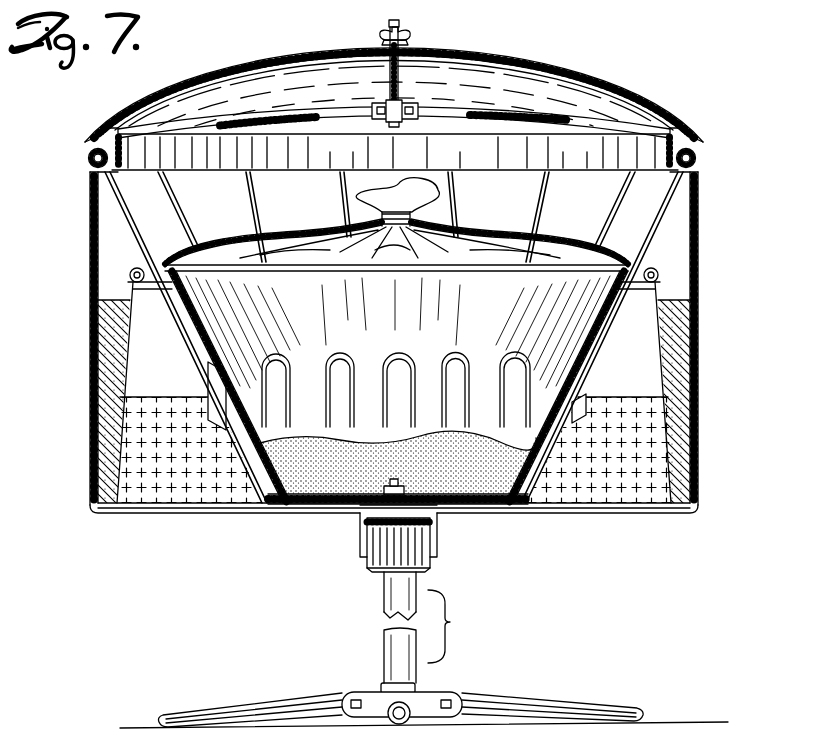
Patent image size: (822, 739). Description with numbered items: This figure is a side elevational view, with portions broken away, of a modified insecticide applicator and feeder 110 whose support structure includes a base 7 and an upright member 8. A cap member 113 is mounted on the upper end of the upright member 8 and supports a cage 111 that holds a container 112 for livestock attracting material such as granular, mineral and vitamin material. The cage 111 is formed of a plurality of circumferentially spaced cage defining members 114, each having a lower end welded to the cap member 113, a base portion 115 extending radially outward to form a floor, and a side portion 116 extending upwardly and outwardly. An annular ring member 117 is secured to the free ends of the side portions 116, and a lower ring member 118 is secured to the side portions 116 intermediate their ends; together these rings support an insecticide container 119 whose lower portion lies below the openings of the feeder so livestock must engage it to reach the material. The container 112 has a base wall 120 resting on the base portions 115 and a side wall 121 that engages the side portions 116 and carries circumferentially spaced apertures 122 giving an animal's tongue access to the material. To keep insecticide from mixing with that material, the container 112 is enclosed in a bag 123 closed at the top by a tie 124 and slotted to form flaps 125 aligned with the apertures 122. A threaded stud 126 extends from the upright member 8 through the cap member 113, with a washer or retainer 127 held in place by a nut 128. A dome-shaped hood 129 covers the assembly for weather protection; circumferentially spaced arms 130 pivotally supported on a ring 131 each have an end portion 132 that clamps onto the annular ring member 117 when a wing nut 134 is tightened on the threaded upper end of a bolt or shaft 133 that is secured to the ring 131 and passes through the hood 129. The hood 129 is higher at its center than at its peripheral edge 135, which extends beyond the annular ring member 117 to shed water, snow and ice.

The base 7 is at (534, 700).
The upright member 8 is at (417, 675).
The insecticide applicator and feeder 110 is at (712, 88).
The cage 111 is at (263, 521).
The container 112 is at (396, 359).
The cap member 113 is at (438, 572).
The cage defining members 114 is at (438, 529).
The base portion 115 is at (300, 513).
The side portion 116 is at (202, 372).
The annular ring member 117 is at (92, 190).
The lower ring member 118 is at (148, 282).
The insecticide container 119 is at (99, 519).
The base wall 120 is at (494, 478).
The side wall 121 is at (582, 328).
The apertures 122 is at (466, 368).
The bag 123 is at (270, 238).
The tie 124 is at (462, 225).
The flaps 125 is at (335, 370).
The threaded stud 126 is at (396, 481).
The washer or retainer 127 is at (362, 493).
The nut 128 is at (406, 482).
The hood 129 is at (572, 62).
The arms 130 is at (461, 112).
The ring 131 is at (395, 152).
The end portion 132 is at (96, 152).
The bolt or shaft 133 is at (396, 24).
The wing nut 134 is at (384, 33).
The peripheral edge 135 is at (703, 138).